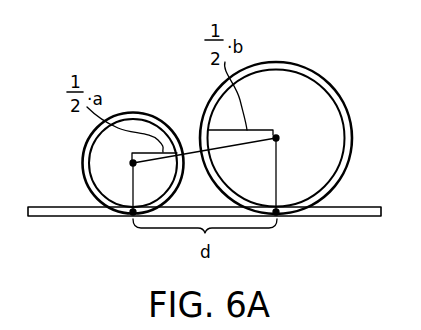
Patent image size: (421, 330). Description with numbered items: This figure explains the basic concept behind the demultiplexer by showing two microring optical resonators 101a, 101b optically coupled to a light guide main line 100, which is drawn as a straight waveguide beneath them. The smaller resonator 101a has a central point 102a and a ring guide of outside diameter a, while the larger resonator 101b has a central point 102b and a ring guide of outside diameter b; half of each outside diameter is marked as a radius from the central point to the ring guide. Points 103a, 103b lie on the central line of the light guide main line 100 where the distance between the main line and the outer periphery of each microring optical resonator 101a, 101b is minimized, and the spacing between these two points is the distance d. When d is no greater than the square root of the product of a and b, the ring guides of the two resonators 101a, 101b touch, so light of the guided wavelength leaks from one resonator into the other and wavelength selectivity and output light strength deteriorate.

The light guide main line 100 is at (380, 207).
The microring optical resonator 101a is at (138, 112).
The microring optical resonator 101b is at (315, 69).
The central point 102a is at (133, 163).
The central point 102b is at (276, 138).
The point on the central line of the light guide main line 103a is at (133, 213).
The point on the central line of the light guide main line 103b is at (277, 213).